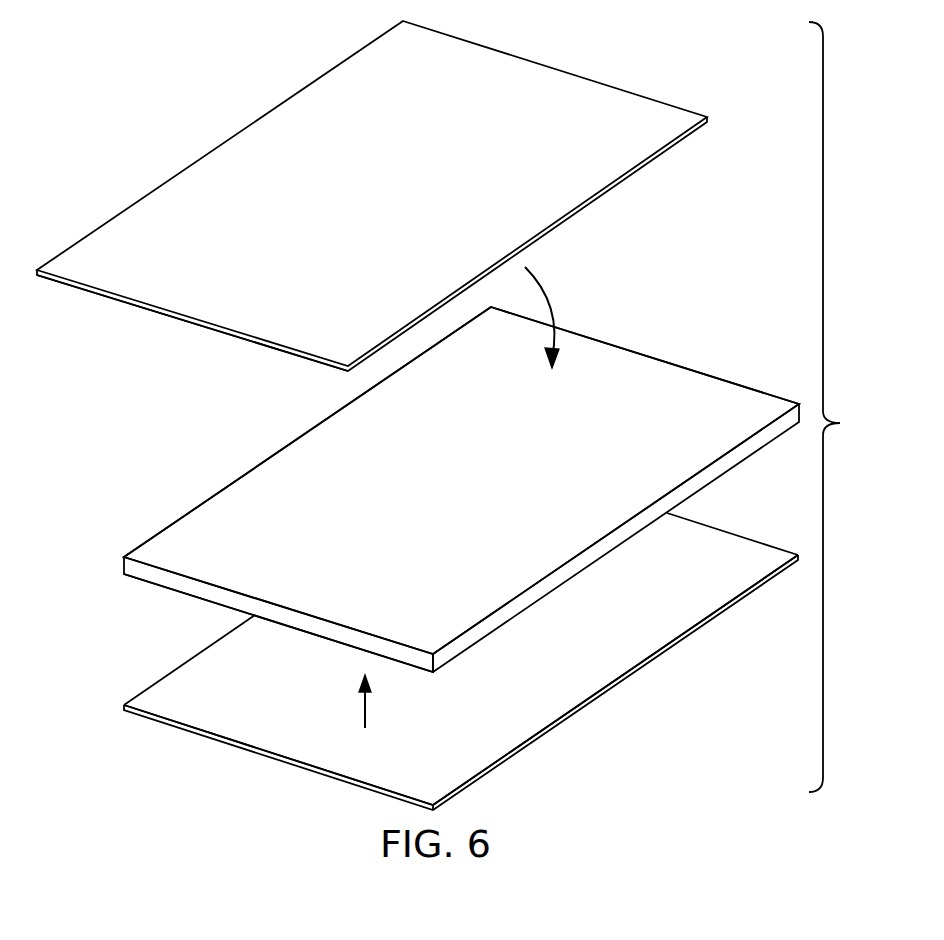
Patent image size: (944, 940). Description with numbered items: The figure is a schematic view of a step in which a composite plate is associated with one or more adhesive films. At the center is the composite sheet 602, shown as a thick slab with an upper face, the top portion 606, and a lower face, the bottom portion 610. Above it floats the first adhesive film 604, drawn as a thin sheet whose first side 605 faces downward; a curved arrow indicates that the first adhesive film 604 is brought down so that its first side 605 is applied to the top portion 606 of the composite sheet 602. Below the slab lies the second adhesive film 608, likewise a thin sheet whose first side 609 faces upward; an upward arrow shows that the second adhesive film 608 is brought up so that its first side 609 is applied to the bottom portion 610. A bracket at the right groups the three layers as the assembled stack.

The composite sheet 602 is at (693, 368).
The first adhesive film 604 is at (190, 163).
The first side of first adhesive film 605 is at (138, 311).
The top portion 606 is at (265, 498).
The second adhesive film 608 is at (622, 677).
The first side of second adhesive film 609 is at (270, 712).
The bottom portion 610 is at (178, 595).